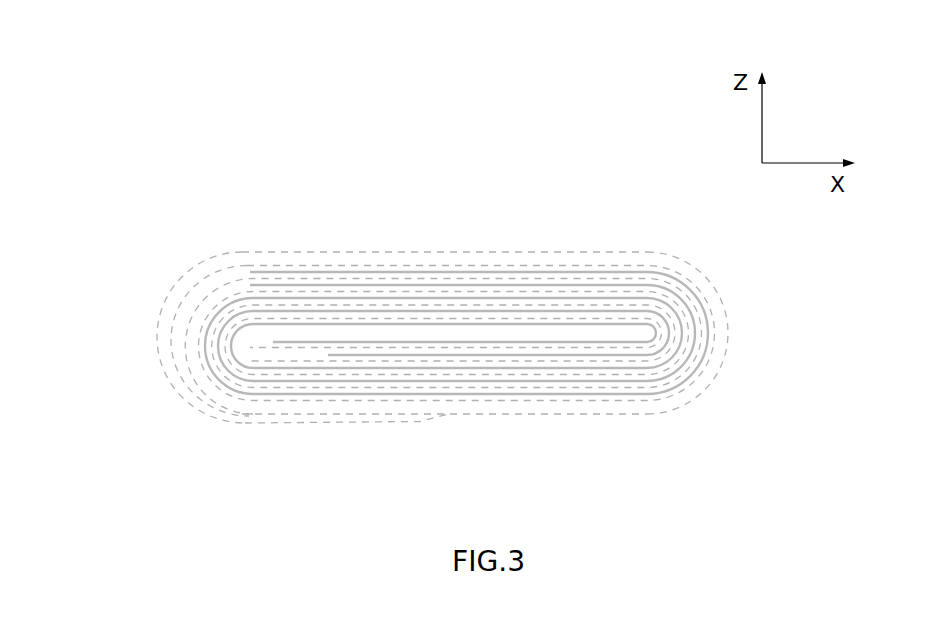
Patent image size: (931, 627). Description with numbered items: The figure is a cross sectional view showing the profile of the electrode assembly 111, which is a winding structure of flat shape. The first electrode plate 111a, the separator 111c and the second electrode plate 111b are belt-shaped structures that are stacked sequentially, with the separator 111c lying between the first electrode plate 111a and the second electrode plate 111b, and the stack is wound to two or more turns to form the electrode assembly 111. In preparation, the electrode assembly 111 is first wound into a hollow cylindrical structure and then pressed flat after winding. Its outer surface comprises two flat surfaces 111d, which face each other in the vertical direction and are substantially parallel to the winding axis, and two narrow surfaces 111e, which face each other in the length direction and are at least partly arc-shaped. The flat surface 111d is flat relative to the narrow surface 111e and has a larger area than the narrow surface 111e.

The electrode assembly 111 is at (160, 188).
The first electrode plate 111a is at (447, 286).
The second electrode plate 111b is at (377, 275).
The separator 111c is at (510, 265).
The flat surface 111d is at (604, 247).
The narrow surface 111e is at (157, 371).